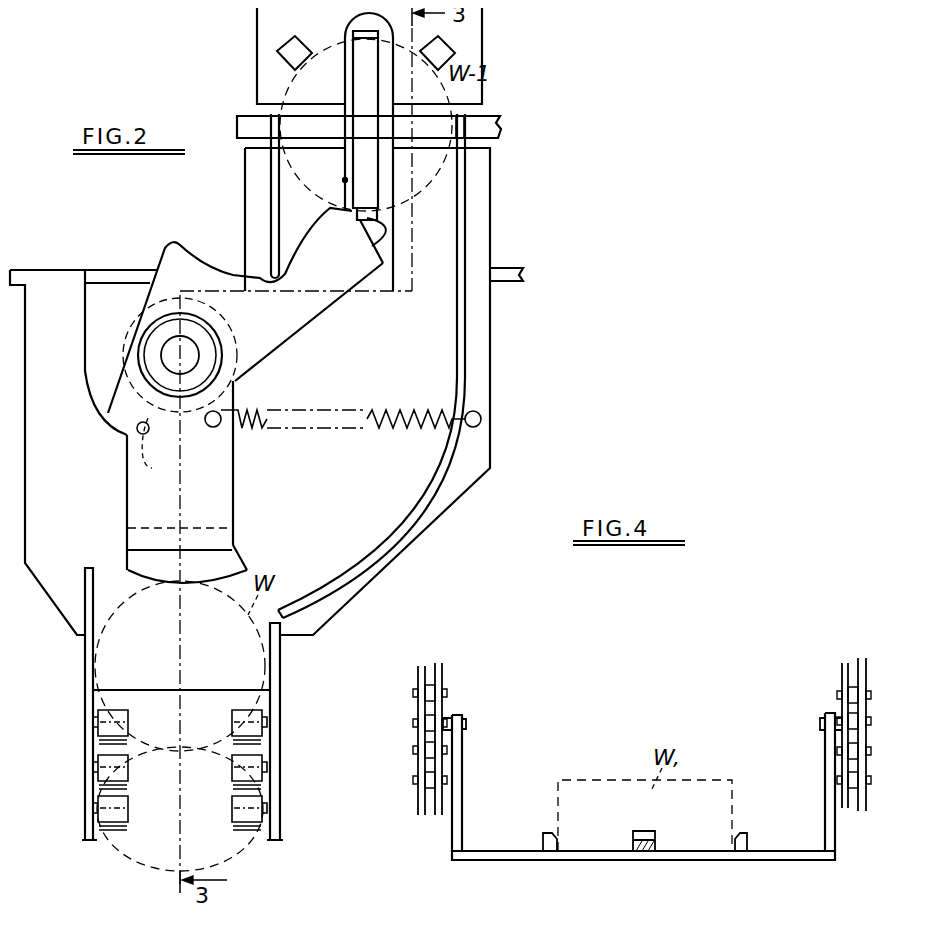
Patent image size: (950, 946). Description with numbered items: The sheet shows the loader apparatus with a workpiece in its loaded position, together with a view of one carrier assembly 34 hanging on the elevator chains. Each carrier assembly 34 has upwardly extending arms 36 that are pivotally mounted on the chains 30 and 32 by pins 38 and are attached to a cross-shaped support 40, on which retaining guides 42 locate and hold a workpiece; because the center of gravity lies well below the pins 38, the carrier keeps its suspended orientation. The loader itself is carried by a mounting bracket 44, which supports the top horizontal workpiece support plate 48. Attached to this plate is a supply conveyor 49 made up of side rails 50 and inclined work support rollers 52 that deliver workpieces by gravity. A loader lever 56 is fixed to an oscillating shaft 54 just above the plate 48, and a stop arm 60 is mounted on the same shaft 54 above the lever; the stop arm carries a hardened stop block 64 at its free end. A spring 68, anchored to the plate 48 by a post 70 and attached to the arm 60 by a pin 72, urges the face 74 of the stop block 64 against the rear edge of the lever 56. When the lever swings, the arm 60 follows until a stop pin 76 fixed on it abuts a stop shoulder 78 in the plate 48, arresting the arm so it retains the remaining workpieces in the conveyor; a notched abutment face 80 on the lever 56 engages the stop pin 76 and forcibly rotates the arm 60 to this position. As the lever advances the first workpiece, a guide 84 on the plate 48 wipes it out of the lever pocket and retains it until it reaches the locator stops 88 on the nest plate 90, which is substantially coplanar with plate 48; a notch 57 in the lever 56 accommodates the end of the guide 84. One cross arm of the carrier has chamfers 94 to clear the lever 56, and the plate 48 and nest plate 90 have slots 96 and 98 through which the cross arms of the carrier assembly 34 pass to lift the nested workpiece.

In FIG. 4, the chain 30 is at (445, 700).
In FIG. 4, the chain 32 is at (853, 695).
In FIG. 2, the carrier assembly 34 is at (387, 115).
In FIG. 4, the carrier assembly 34 is at (671, 806).
In FIG. 4, the upwardly extending arm 36 is at (462, 791).
In FIG. 4, the pin 38 is at (466, 727).
In FIG. 2, the cross-shaped support 40 is at (490, 132).
In FIG. 4, the cross-shaped support 40 is at (782, 860).
In FIG. 2, the retaining guide 42 is at (463, 127).
In FIG. 4, the retaining guide 42 is at (542, 843).
In FIG. 2, the mounting bracket 44 is at (520, 262).
In FIG. 2, the top horizontal workpiece support plate 48 is at (480, 230).
In FIG. 2, the supply conveyor 49 is at (194, 770).
In FIG. 2, the side rail 50 is at (85, 702).
In FIG. 2, the work support roller 52 is at (110, 765).
In FIG. 2, the oscillating shaft 54 is at (176, 356).
In FIG. 2, the loader lever 56 is at (292, 330).
In FIG. 2, the notch 57 is at (262, 270).
In FIG. 2, the stop arm 60 is at (213, 493).
In FIG. 2, the hardened stop block 64 is at (135, 566).
In FIG. 2, the spring 68 is at (402, 416).
In FIG. 2, the post 70 is at (485, 421).
In FIG. 2, the pin 72 is at (219, 429).
In FIG. 2, the face 74 is at (240, 552).
In FIG. 2, the stop pin 76 is at (138, 437).
In FIG. 2, the stop shoulder 78 is at (150, 472).
In FIG. 2, the notched abutment face 80 is at (92, 401).
In FIG. 2, the guide 84 is at (271, 205).
In FIG. 2, the locator stop 88 is at (280, 57).
In FIG. 2, the nest plate 90 is at (266, 23).
In FIG. 2, the chamfer 94 is at (372, 242).
In FIG. 2, the slot 96 is at (345, 182).
In FIG. 2, the slot 98 is at (345, 87).